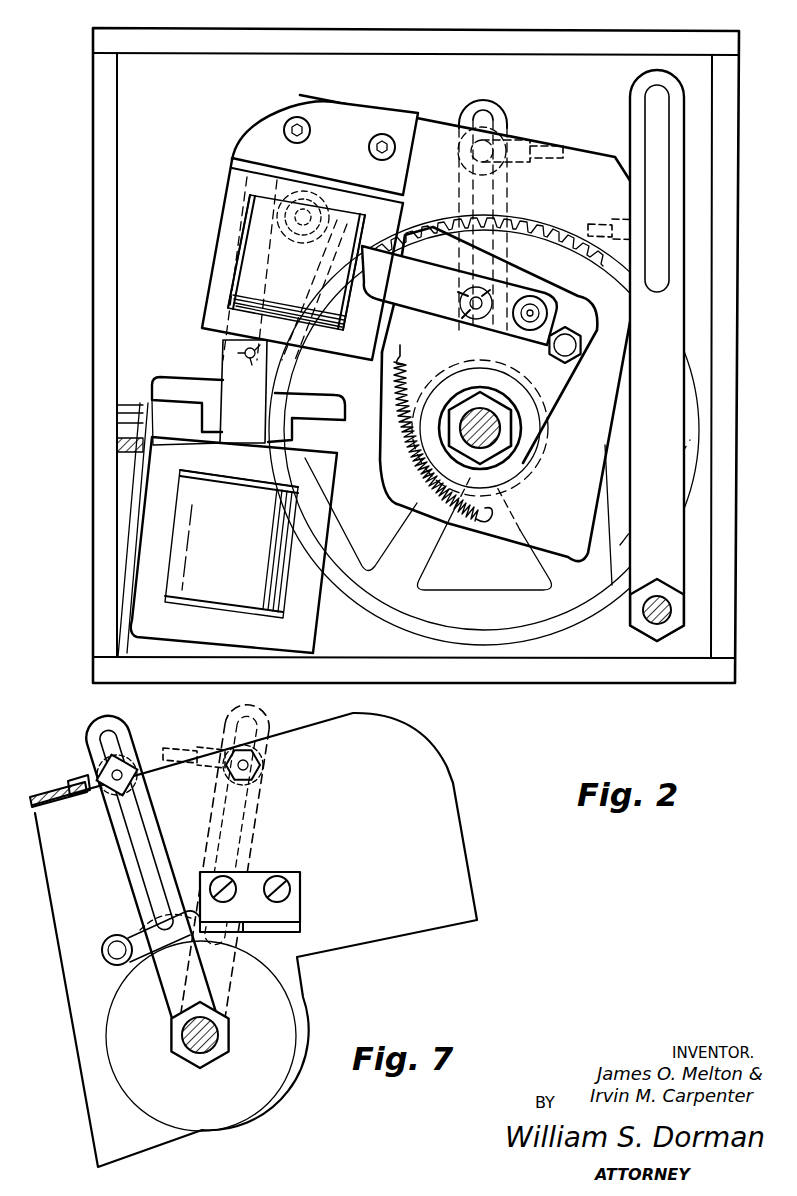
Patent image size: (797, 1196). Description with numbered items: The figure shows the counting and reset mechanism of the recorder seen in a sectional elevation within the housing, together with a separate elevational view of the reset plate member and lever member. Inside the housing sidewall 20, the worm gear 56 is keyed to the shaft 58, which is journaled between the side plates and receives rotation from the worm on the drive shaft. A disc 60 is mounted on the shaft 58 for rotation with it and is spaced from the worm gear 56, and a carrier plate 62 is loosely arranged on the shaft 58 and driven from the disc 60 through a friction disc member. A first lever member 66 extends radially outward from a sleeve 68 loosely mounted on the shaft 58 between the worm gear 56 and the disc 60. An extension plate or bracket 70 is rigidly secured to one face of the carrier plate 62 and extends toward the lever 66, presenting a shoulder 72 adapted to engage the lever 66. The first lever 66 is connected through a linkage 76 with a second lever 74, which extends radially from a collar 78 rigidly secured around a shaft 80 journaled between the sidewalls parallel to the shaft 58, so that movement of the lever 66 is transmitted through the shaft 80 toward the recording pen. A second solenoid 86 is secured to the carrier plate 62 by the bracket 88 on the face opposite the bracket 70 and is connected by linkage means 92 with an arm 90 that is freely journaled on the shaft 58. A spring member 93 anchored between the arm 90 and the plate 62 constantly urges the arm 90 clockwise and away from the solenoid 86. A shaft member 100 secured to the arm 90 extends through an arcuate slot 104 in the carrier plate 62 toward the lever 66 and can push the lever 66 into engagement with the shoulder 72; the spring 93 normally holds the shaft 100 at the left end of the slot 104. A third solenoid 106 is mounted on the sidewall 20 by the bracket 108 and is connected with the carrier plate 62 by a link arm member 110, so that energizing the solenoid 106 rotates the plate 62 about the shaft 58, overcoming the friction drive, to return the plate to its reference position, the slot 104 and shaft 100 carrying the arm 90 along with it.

In FIG. 2, the sidewall 20 is at (103, 465).
In FIG. 2, the worm gear 56 is at (488, 625).
In FIG. 2, the shaft 58 is at (500, 435).
In FIG. 7, the shaft 58 is at (208, 1048).
In FIG. 7, the disc 60 is at (270, 1012).
In FIG. 2, the carrier plate 62 is at (425, 135).
In FIG. 2, the first lever member 66 is at (500, 118).
In FIG. 7, the first lever member 66 is at (120, 858).
In FIG. 2, the sleeve 68 is at (498, 420).
In FIG. 7, the sleeve 68 is at (178, 1038).
In FIG. 7, the extension plate or bracket 70 is at (290, 872).
In FIG. 7, the shoulder 72 is at (232, 935).
In FIG. 2, the second lever 74 is at (680, 125).
In FIG. 2, the linkage 76 is at (545, 150).
In FIG. 7, the linkage 76 is at (52, 795).
In FIG. 2, the collar 78 is at (675, 628).
In FIG. 2, the shaft 80 is at (638, 625).
In FIG. 2, the second solenoid 86 is at (248, 258).
In FIG. 2, the bracket 88 is at (292, 128).
In FIG. 2, the arm 90 is at (430, 380).
In FIG. 2, the linkage means 92 is at (518, 265).
In FIG. 2, the spring member 93 is at (418, 468).
In FIG. 7, the shaft member 100 is at (110, 957).
In FIG. 2, the arcuate slot 104 is at (560, 300).
In FIG. 7, the arcuate slot 104 is at (130, 914).
In FIG. 2, the third solenoid 106 is at (248, 603).
In FIG. 2, the bracket 108 is at (150, 545).
In FIG. 2, the link arm member 110 is at (225, 335).